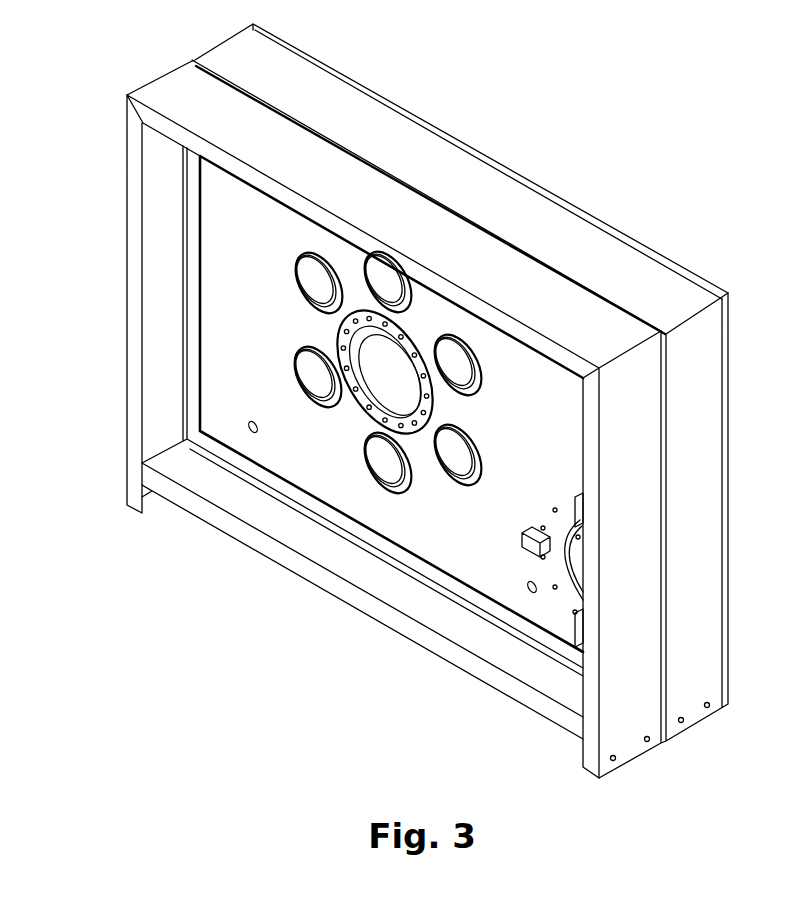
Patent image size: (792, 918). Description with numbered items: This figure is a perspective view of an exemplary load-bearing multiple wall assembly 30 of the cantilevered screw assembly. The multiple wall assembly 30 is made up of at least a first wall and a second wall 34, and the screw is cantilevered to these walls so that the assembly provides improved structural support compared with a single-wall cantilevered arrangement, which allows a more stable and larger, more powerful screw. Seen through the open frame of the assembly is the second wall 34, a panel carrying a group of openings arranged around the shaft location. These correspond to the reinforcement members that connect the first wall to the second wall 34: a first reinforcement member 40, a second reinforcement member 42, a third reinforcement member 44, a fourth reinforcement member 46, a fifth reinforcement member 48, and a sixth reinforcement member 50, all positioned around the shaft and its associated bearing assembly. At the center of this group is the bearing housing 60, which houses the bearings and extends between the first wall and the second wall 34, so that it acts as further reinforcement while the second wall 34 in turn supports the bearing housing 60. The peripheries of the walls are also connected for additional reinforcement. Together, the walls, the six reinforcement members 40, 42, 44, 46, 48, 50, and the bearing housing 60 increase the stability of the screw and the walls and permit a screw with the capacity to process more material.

The multiple wall assembly 30 is at (560, 144).
The second wall 34 is at (227, 277).
The first reinforcement member 40 is at (392, 258).
The second reinforcement member 42 is at (378, 488).
The third reinforcement member 44 is at (319, 258).
The fourth reinforcement member 46 is at (463, 340).
The fifth reinforcement member 48 is at (298, 380).
The sixth reinforcement member 50 is at (462, 486).
The bearing housing 60 is at (416, 334).